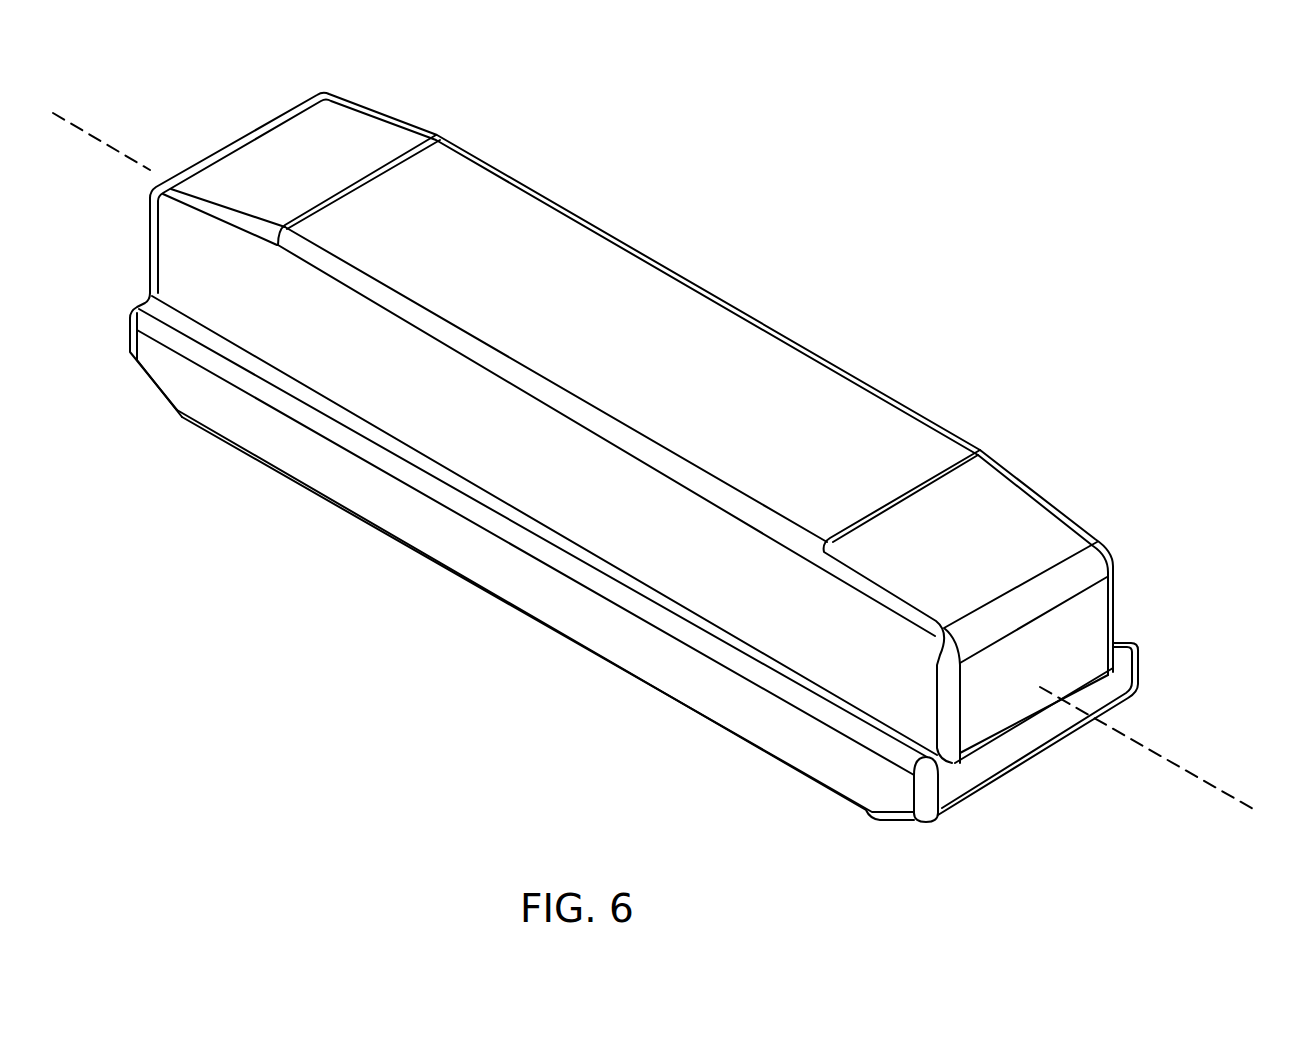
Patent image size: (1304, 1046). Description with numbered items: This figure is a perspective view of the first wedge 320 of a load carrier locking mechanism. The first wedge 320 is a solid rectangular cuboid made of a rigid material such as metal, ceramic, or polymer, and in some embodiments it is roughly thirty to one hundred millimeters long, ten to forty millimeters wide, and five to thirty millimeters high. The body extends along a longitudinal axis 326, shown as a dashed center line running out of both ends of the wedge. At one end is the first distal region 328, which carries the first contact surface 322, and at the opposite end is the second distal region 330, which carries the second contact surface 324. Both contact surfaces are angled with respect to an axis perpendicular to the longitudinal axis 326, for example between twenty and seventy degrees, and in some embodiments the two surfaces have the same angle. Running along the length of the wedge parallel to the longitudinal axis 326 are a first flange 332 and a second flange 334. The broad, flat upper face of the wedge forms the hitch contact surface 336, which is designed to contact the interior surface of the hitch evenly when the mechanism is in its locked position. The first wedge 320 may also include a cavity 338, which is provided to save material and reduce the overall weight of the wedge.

The first wedge 320 is at (910, 135).
The first contact surface 322 is at (898, 832).
The second contact surface 324 is at (143, 384).
The longitudinal axis 326 is at (1183, 770).
The first distal region 328 is at (1062, 475).
The second distal region 330 is at (370, 85).
The first flange 332 is at (783, 668).
The second flange 334 is at (1120, 640).
The hitch contact surface 336 is at (738, 345).
The cavity 338 is at (532, 645).